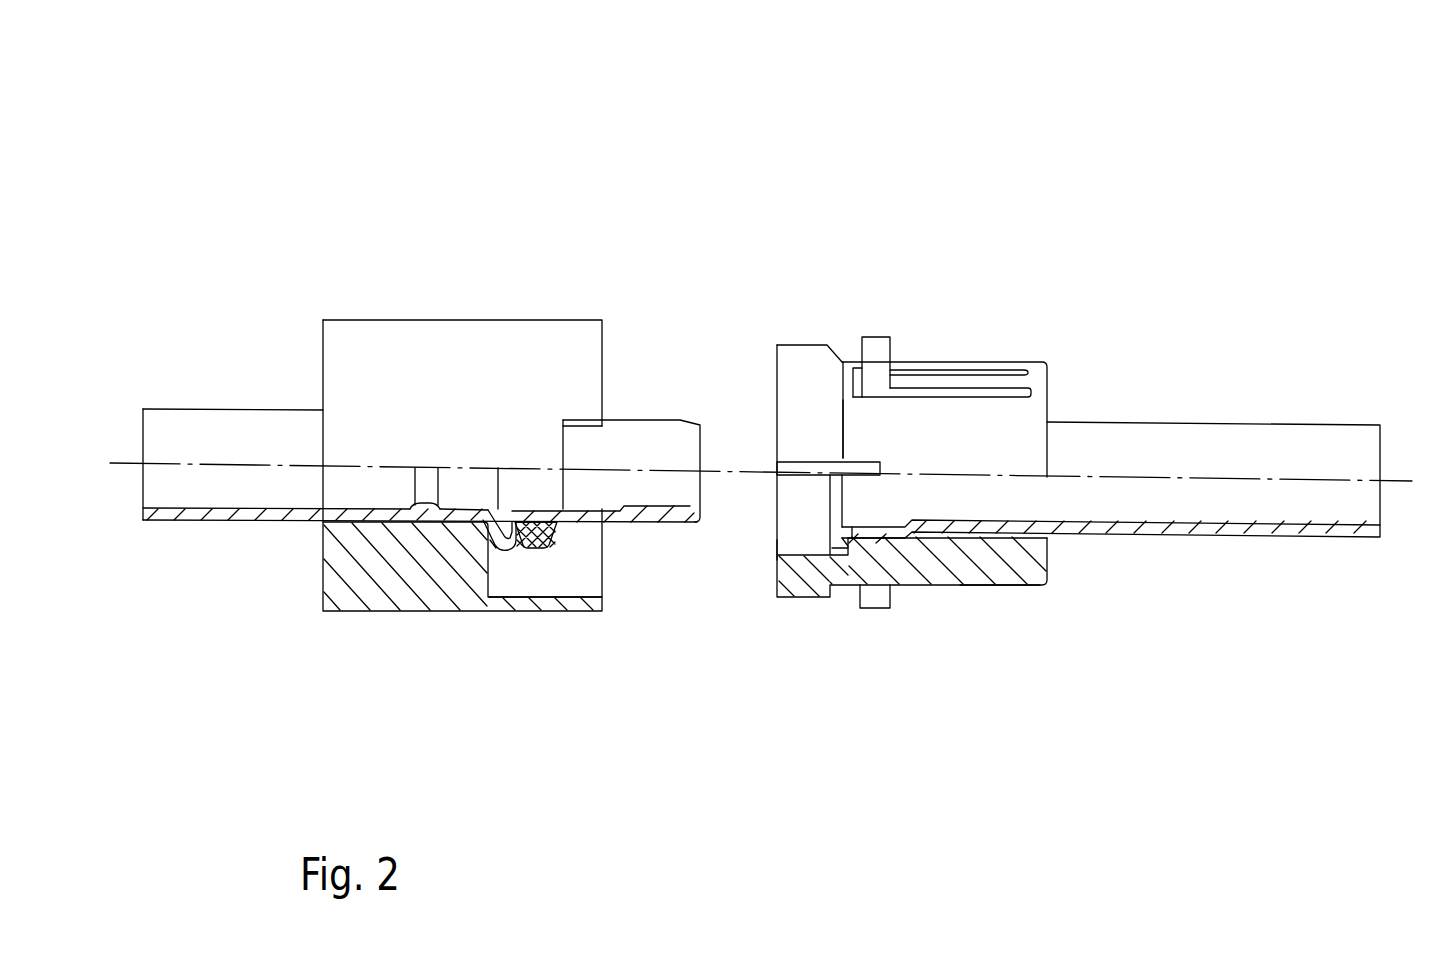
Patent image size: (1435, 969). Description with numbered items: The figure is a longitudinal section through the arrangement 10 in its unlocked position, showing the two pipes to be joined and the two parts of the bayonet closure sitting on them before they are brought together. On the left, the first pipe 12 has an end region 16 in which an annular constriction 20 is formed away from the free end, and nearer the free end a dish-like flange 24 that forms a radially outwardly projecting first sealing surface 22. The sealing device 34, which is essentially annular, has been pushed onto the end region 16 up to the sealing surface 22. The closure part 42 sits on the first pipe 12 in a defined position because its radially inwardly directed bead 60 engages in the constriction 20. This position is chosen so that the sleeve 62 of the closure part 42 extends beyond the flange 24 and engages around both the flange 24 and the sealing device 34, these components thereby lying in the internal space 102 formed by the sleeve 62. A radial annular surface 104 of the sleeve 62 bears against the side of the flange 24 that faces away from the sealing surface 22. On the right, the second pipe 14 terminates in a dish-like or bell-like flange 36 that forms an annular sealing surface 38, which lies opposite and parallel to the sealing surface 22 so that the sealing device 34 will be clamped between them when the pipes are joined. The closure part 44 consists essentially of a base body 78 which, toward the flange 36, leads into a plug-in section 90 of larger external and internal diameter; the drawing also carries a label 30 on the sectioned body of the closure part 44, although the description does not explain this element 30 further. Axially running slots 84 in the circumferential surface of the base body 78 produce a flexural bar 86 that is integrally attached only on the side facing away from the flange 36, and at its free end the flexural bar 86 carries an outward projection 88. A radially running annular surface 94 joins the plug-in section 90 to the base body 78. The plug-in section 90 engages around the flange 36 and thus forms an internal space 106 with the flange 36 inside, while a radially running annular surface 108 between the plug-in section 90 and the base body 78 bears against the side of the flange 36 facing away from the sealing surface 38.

The arrangement 10 is at (728, 173).
The first pipe 12 is at (250, 520).
The second pipe 14 is at (1130, 528).
The end region of the first pipe 16 is at (643, 437).
The constriction 20 is at (418, 517).
The first sealing surface 22 is at (523, 550).
The dish-like flange 24 is at (510, 545).
The connector body 30 is at (957, 537).
The sealing device 34 is at (547, 525).
The flange 36 is at (828, 558).
The annular sealing surface 38 is at (802, 512).
The closure part 42 is at (453, 236).
The closure part 44 is at (951, 216).
The bead 60 is at (430, 525).
The sleeve 62 is at (582, 604).
The base body 78 is at (1012, 567).
The slot 84 is at (1010, 368).
The flexural bar 86 is at (967, 383).
The projection 88 is at (877, 350).
The plug-in section 90 is at (813, 378).
The annular surface 94 is at (845, 428).
The internal space 102 is at (580, 568).
The radial annular surface 104 is at (495, 552).
The internal space 106 is at (777, 551).
The radially running annular surface 108 is at (838, 545).